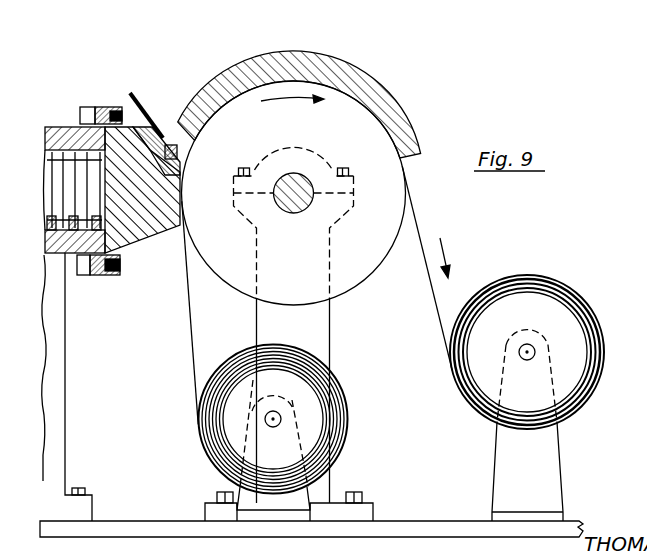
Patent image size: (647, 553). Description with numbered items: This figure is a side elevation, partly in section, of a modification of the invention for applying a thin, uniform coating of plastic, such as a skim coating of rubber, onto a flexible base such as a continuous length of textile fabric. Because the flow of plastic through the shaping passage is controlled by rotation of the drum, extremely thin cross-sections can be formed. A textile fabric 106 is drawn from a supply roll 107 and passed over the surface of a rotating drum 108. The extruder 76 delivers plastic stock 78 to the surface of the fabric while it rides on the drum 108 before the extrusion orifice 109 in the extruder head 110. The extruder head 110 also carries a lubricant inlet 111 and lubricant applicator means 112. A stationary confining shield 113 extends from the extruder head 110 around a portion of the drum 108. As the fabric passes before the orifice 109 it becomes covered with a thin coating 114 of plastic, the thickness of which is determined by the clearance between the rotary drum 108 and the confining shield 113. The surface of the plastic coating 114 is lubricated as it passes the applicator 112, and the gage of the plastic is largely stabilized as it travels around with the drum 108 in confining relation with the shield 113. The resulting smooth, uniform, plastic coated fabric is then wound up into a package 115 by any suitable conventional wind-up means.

The extruder 76 is at (56, 130).
The plastic stock 78 is at (146, 142).
The textile fabric 106 is at (187, 345).
The supply roll 107 is at (205, 421).
The rotating drum 108 is at (352, 112).
The extrusion orifice 109 is at (159, 234).
The extruder head 110 is at (133, 262).
The lubricant inlet 111 is at (136, 94).
The lubricant applicator means 112 is at (170, 116).
The stationary confining shield 113 is at (253, 62).
The plastic coating 114 is at (416, 209).
The package 115 is at (584, 308).